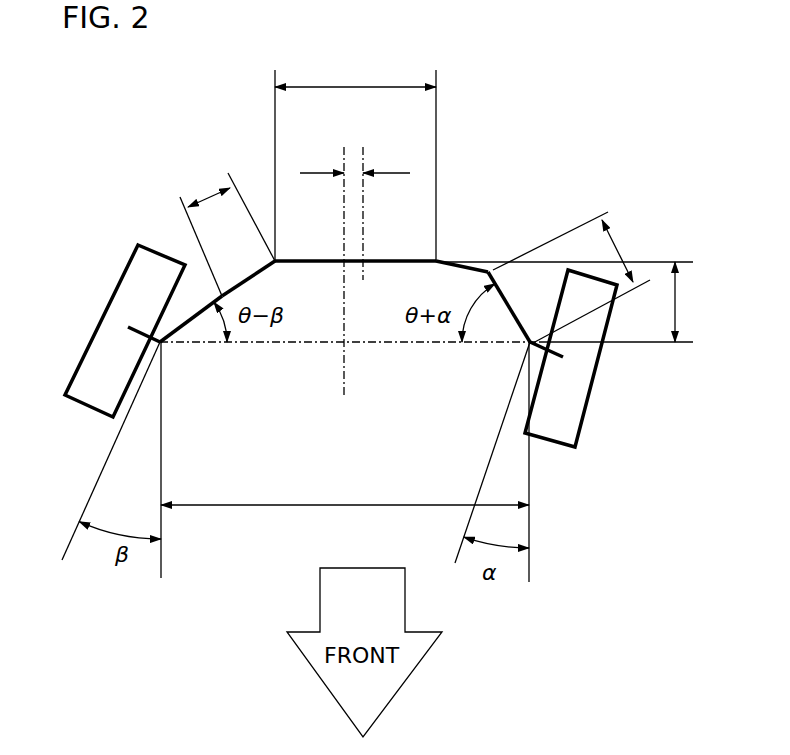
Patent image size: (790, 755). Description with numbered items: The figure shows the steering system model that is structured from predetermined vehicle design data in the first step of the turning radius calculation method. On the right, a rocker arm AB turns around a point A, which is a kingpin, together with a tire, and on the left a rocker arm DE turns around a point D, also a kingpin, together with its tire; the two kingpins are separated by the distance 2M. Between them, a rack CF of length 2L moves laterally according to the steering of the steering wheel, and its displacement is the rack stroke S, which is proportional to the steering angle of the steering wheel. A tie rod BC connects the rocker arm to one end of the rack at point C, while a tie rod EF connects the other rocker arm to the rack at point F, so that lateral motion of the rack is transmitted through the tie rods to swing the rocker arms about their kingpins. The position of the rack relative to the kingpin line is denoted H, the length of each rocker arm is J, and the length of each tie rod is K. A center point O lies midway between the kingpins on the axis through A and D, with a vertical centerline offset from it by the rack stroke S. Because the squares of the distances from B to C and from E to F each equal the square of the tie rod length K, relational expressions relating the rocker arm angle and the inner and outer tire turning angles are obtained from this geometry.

The point A (kingpin) A is at (552, 431).
The point B is at (548, 277).
The point C is at (449, 171).
The point D (kingpin) D is at (142, 437).
The point E is at (227, 247).
The point F is at (332, 165).
The center point O is at (350, 272).
The length of the rack 2L is at (355, 73).
The distance between the kingpins 2M is at (345, 489).
The rack stroke S is at (355, 161).
The position of the rack H is at (689, 302).
The length of the rocker arm J is at (618, 251).
The length of the tie rod K is at (209, 189).